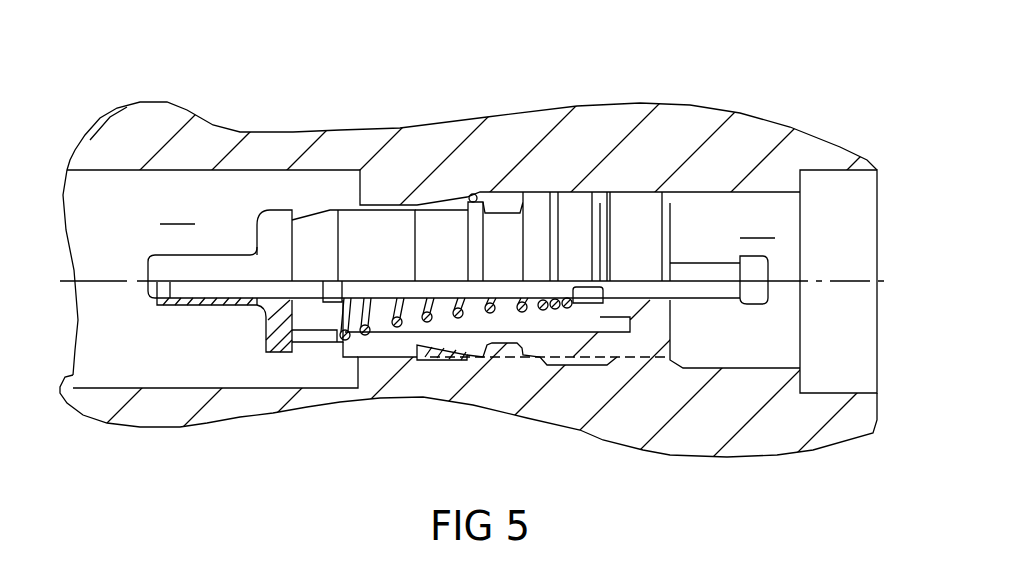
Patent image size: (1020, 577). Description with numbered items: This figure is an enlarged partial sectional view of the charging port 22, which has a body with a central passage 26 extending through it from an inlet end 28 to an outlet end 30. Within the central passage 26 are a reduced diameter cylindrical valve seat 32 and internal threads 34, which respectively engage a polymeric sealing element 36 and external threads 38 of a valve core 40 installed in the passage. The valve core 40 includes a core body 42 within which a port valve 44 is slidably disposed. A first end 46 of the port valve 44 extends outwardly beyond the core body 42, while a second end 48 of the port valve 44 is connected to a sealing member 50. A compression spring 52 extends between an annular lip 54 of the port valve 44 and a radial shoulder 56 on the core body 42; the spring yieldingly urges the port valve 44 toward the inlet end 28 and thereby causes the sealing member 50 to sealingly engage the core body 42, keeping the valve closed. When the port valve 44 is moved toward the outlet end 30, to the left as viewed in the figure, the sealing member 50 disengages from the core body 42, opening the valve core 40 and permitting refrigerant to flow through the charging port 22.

The charging port 22 is at (213, 86).
The central passage 26 is at (467, 218).
The inlet end 28 is at (877, 393).
The outlet end 30 is at (72, 377).
The reduced diameter cylindrical valve seat 32 is at (478, 198).
The internal threads 34 is at (600, 200).
The polymeric sealing element 36 is at (443, 223).
The external threads 38 is at (652, 197).
The valve core 40 is at (314, 205).
The core body 42 is at (590, 340).
The port valve 44 is at (710, 268).
The first end 46 is at (770, 296).
The second end 48 is at (173, 305).
The sealing member 50 is at (279, 337).
The compression spring 52 is at (356, 340).
The annular lip 54 is at (584, 303).
The radial shoulder 56 is at (327, 340).